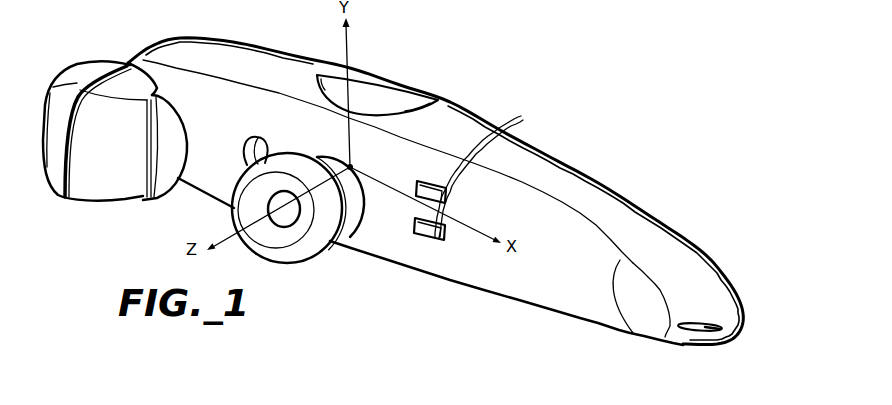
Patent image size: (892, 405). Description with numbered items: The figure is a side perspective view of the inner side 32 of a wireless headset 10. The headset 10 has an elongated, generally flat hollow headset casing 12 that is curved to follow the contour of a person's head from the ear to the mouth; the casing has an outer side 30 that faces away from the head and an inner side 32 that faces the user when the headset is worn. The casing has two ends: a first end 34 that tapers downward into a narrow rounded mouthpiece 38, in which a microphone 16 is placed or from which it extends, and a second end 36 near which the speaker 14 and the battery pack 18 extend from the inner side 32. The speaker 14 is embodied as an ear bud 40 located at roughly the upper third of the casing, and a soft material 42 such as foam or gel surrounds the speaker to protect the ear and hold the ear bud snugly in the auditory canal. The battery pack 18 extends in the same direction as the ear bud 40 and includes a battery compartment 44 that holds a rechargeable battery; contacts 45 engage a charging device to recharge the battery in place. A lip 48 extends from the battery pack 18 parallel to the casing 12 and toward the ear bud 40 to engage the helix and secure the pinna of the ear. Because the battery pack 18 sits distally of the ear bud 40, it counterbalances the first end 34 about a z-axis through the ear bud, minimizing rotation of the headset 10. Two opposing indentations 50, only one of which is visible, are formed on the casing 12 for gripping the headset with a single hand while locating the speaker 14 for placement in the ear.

The headset 10 is at (478, 103).
The headset casing 12 is at (612, 164).
The speaker 14 is at (283, 218).
The microphone 16 is at (685, 331).
The battery pack 18 is at (76, 70).
The outer side 30 is at (326, 48).
The inner side 32 is at (547, 289).
The first end 34 is at (721, 247).
The second end 36 is at (152, 40).
The mouthpiece 38 is at (637, 287).
The ear bud 40 is at (228, 214).
The soft material 42 is at (325, 222).
The battery compartment 44 is at (112, 165).
The contacts 45 is at (521, 119).
The lip 48 is at (172, 115).
The opposing indentations 50 is at (374, 83).